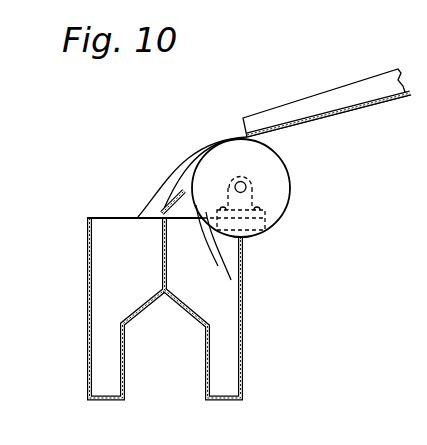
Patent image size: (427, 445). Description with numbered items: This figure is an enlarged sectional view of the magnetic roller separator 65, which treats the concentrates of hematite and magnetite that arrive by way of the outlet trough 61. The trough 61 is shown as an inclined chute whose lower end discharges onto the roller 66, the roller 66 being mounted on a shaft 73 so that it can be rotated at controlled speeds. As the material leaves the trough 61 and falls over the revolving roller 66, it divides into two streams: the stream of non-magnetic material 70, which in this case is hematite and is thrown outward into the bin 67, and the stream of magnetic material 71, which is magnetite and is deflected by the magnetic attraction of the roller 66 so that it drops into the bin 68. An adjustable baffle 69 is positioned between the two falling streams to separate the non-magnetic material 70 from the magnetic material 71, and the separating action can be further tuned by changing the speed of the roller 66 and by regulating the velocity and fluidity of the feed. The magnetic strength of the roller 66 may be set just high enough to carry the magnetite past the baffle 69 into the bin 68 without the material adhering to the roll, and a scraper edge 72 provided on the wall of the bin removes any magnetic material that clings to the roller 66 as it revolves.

The outlet trough 61 is at (305, 108).
The magnetic separator 65 is at (246, 313).
The roller 66 is at (280, 158).
The bin 67 is at (98, 250).
The bin 68 is at (243, 284).
The adjustable baffle 69 is at (178, 188).
The stream of non-magnetic material 70 is at (147, 207).
The stream of magnetic material 71 is at (217, 252).
The scraper edge 72 is at (244, 239).
The shaft 73 is at (247, 188).